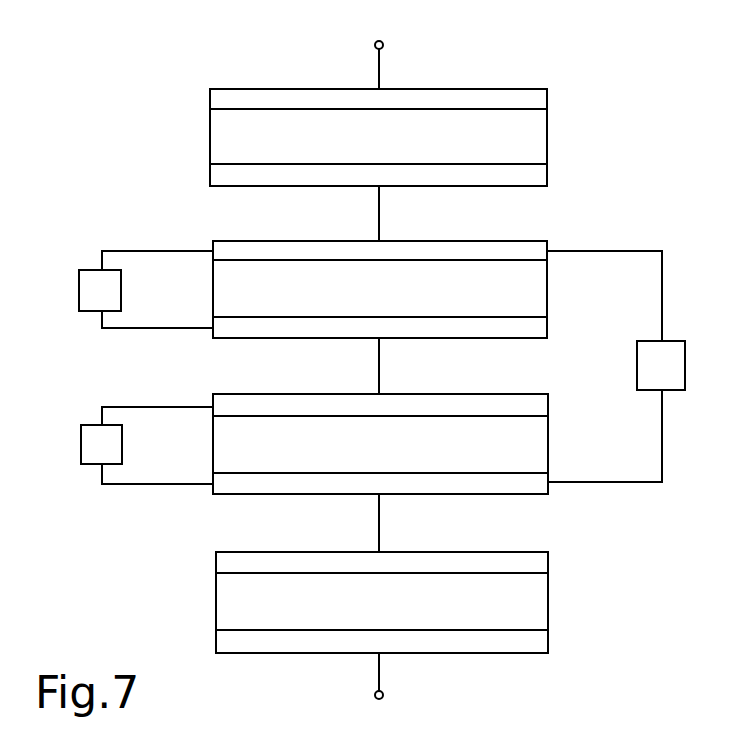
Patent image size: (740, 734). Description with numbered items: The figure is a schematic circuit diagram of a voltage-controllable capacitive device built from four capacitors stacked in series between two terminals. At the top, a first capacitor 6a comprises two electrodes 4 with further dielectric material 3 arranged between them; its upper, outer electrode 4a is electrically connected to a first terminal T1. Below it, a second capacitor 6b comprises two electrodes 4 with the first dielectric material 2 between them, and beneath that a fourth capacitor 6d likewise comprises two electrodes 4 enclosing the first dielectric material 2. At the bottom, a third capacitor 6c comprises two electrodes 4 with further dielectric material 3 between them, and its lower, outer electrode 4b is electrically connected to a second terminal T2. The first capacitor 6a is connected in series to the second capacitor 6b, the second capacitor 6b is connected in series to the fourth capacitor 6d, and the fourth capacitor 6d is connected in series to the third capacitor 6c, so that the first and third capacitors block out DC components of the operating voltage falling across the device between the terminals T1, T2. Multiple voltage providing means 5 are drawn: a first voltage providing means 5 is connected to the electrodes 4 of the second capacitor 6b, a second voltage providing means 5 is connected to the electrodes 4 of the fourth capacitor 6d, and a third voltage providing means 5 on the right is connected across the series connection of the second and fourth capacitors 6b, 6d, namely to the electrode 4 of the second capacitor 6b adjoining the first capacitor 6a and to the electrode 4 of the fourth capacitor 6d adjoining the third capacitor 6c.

The first dielectric material 2 is at (533, 293).
The further dielectric material 3 is at (535, 138).
The electrode 4 is at (537, 176).
The outer electrode of the first capacitor 4a is at (537, 100).
The outer electrode of the third capacitor 4b is at (537, 640).
The voltage providing means 5 is at (90, 289).
The first capacitor 6a is at (210, 89).
The second capacitor 6b is at (213, 242).
The third capacitor 6c is at (216, 552).
The fourth capacitor 6d is at (213, 395).
The first terminal T1 is at (383, 47).
The second terminal T2 is at (383, 693).